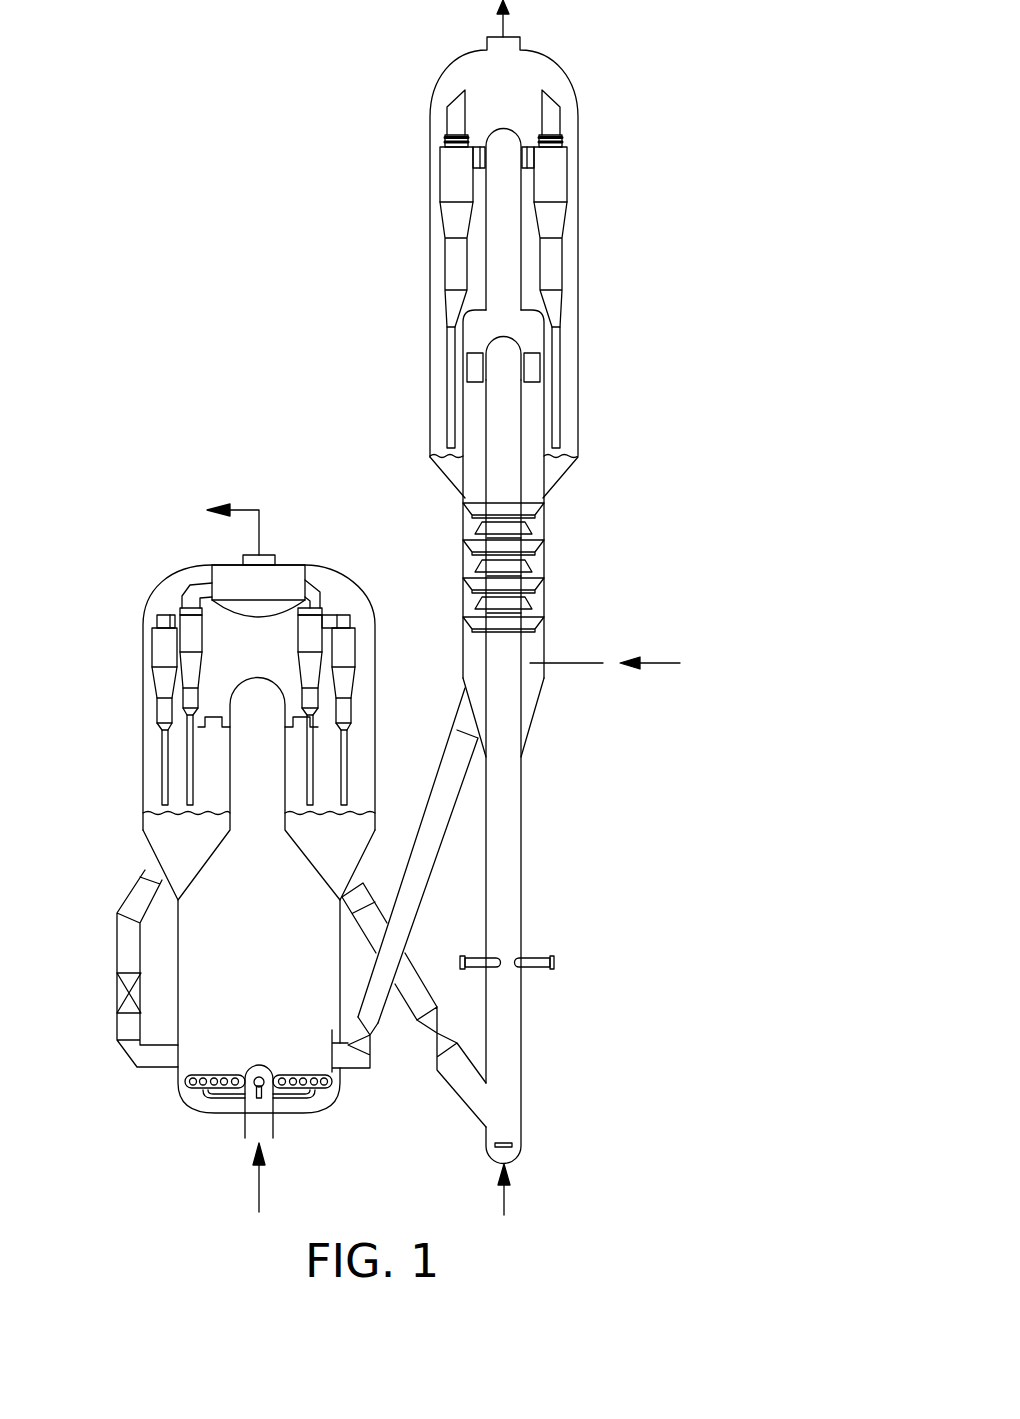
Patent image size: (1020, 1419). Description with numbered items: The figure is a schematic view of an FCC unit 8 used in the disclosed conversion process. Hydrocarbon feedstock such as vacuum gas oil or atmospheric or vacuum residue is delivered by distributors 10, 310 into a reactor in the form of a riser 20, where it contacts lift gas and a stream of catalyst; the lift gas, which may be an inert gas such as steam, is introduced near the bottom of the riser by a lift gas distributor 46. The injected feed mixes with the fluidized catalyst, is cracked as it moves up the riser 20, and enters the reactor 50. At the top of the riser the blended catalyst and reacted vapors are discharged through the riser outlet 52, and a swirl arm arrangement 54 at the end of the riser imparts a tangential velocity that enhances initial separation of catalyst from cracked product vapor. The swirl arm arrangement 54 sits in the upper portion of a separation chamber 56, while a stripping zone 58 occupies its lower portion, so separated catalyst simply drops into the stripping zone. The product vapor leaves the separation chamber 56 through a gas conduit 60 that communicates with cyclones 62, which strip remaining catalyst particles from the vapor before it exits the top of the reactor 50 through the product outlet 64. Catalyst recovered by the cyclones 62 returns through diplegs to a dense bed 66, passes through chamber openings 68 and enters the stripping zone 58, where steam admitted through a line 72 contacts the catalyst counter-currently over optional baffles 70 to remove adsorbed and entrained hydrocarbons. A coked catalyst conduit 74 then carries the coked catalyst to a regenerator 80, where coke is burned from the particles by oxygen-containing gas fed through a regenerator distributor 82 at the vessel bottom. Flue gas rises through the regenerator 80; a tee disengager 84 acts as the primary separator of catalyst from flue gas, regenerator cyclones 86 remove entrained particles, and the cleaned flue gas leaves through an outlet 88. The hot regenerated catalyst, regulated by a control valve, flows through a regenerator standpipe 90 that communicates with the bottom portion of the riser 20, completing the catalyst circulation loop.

The FCC unit 8 is at (352, 372).
The distributor 10 is at (483, 972).
The riser 20 is at (522, 850).
The lift gas distributor 46 is at (495, 1145).
The reactor 50 is at (578, 232).
The riser outlet 52 is at (535, 363).
The swirl arm arrangement 54 is at (483, 352).
The separation chamber 56 is at (540, 403).
The stripping zone 58 is at (545, 531).
The gas conduit 60 is at (515, 265).
The cyclones 62 is at (453, 175).
The product outlet 64 is at (505, 23).
The dense bed 66 is at (430, 455).
The chamber openings 68 is at (463, 483).
The baffles 70 is at (533, 597).
The line 72 is at (566, 668).
The coked catalyst conduit 74 is at (432, 786).
The regenerator 80 is at (212, 930).
The regenerator distributor 82 is at (245, 1133).
The tee disengager 84 is at (215, 700).
The regenerator cyclones 86 is at (168, 646).
The outlet 88 is at (267, 553).
The regenerator standpipe 90 is at (408, 1013).
The distributor 310 is at (538, 968).